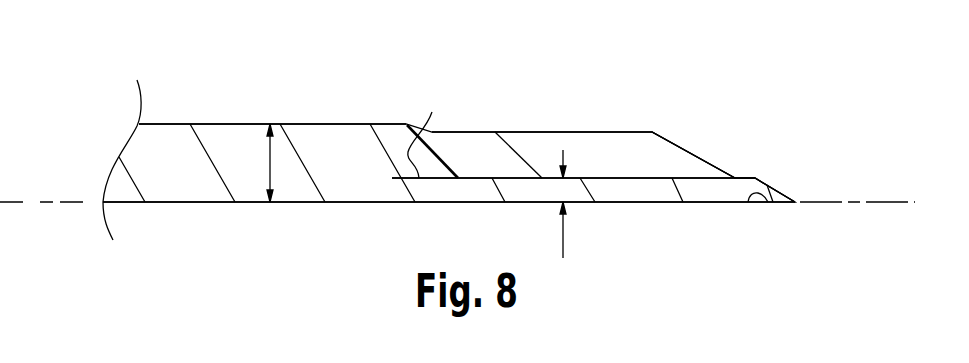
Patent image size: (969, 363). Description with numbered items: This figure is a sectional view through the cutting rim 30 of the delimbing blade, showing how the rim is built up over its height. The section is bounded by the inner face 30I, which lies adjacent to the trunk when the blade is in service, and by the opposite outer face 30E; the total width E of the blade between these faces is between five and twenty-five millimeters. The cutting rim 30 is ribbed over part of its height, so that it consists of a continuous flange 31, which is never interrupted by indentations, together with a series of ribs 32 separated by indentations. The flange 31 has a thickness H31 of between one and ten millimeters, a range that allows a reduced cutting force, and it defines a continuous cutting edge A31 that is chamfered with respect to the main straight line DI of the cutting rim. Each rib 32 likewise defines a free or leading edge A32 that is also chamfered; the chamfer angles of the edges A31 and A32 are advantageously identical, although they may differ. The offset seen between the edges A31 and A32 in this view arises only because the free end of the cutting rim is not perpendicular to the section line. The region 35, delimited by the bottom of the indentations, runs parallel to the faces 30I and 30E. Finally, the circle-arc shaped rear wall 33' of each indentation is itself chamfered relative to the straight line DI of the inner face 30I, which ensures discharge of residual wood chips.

The cutting rim 30 is at (803, 222).
The outer face 30E is at (254, 102).
The inner face 30I is at (298, 216).
The rib 32 is at (582, 158).
The continuous flange 31 is at (717, 193).
The region 35 is at (608, 178).
The rear wall 33' is at (444, 187).
The free edge A32 is at (687, 151).
The continuous cutting edge A31 is at (780, 190).
The total width E is at (259, 163).
The thickness of the flange H31 is at (587, 204).
The main straight line DI is at (20, 203).